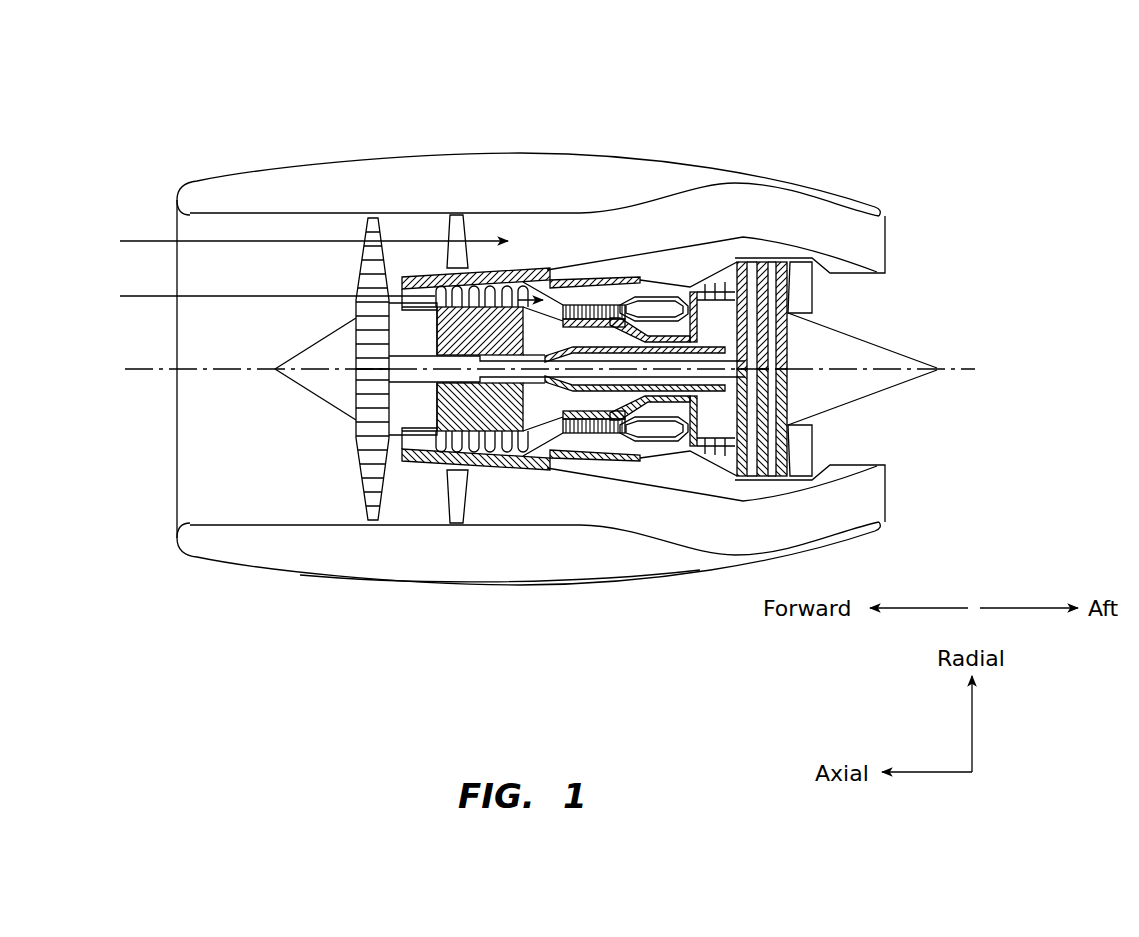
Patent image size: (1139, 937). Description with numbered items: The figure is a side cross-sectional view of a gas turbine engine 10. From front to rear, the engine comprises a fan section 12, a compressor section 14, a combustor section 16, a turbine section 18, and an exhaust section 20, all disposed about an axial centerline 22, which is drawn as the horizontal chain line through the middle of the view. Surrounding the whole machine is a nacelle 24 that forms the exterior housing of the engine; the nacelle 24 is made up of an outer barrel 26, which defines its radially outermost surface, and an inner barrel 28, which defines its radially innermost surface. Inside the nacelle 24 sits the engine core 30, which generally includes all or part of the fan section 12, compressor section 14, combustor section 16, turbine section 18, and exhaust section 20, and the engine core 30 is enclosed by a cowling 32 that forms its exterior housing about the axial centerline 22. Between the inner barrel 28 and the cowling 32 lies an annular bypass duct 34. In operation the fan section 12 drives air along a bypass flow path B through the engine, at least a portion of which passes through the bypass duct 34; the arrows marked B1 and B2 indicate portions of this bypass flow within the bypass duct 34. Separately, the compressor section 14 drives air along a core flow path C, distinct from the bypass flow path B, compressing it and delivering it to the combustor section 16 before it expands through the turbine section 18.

The gas turbine engine 10 is at (975, 95).
The fan section 12 is at (395, 132).
The compressor section 14 is at (610, 132).
The combustor section 16 is at (680, 132).
The turbine section 18 is at (820, 132).
The exhaust section 20 is at (952, 132).
The axial centerline 22 is at (945, 398).
The nacelle 24 is at (262, 582).
The outer barrel 26 is at (374, 578).
The inner barrel 28 is at (297, 520).
The engine core 30 is at (654, 460).
The cowling 32 is at (718, 498).
The bypass duct 34 is at (600, 254).
The bypass flow path B is at (148, 240).
The portion of bypass flow path B1 is at (680, 213).
The portion of bypass flow path B2 is at (703, 227).
The core flow path C is at (236, 294).